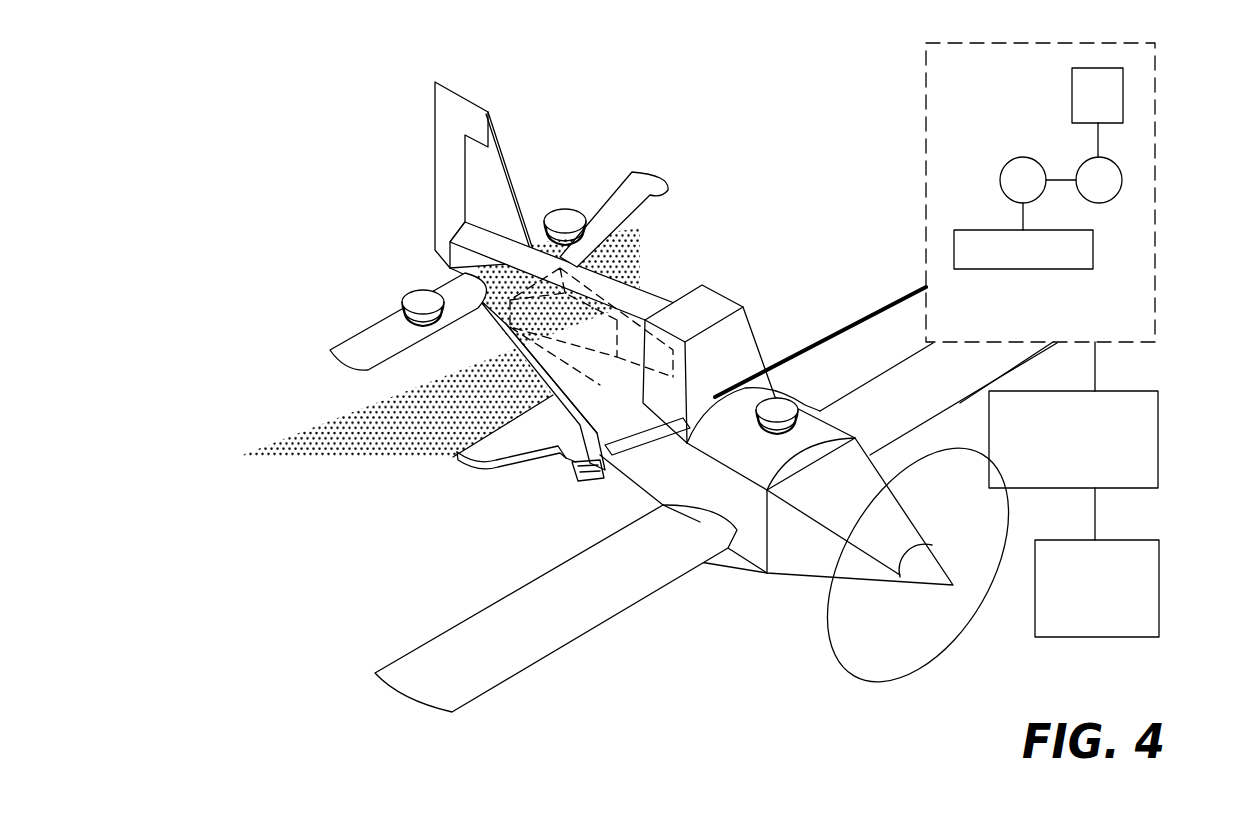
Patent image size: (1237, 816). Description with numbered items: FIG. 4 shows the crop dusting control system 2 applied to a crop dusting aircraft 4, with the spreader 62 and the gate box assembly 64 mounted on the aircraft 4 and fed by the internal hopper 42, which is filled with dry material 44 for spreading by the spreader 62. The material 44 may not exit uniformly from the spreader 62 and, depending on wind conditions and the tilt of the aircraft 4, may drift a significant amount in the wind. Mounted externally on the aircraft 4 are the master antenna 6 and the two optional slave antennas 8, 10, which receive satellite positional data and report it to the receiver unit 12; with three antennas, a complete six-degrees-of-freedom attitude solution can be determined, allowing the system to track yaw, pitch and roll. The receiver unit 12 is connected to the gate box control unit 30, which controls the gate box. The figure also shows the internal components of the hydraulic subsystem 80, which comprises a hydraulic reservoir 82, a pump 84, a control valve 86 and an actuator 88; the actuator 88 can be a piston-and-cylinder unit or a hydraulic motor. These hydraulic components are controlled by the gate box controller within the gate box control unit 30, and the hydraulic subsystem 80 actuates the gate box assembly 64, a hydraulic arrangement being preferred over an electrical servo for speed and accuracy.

The crop dusting control system 2 is at (772, 158).
The crop dusting aircraft 4 is at (707, 283).
The master antenna 6 is at (785, 397).
The slave antenna 8 is at (431, 291).
The slave antenna 10 is at (566, 209).
The receiver unit 12 is at (1097, 562).
The gate box control unit 30 is at (1059, 415).
The internal hopper 42 is at (622, 320).
The dry material 44 is at (347, 423).
The spreader 62 is at (487, 450).
The gate box assembly 64 is at (603, 465).
The hydraulic subsystem 80 is at (935, 220).
The hydraulic reservoir 82 is at (1097, 112).
The pump 84 is at (1112, 163).
The control valve 86 is at (1007, 163).
The actuator 88 is at (1023, 251).